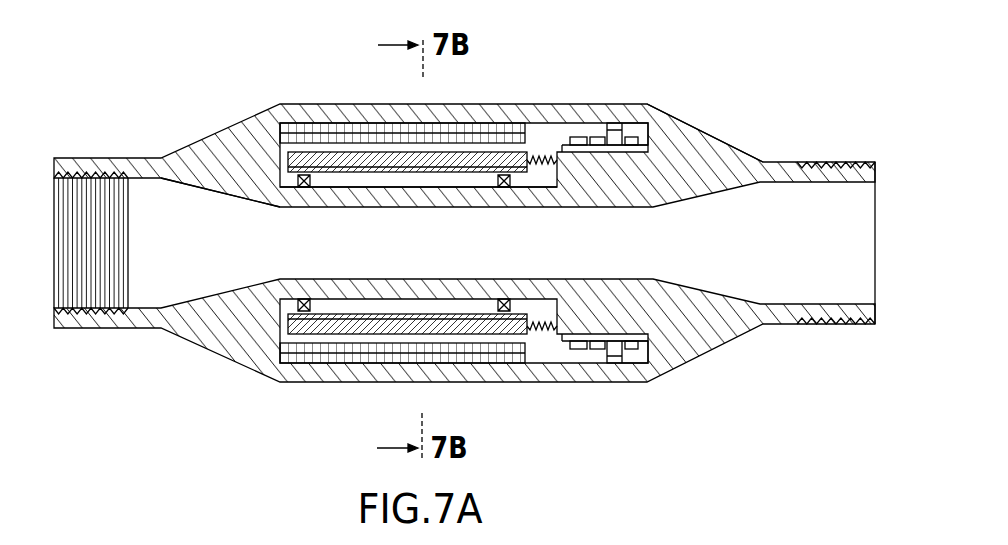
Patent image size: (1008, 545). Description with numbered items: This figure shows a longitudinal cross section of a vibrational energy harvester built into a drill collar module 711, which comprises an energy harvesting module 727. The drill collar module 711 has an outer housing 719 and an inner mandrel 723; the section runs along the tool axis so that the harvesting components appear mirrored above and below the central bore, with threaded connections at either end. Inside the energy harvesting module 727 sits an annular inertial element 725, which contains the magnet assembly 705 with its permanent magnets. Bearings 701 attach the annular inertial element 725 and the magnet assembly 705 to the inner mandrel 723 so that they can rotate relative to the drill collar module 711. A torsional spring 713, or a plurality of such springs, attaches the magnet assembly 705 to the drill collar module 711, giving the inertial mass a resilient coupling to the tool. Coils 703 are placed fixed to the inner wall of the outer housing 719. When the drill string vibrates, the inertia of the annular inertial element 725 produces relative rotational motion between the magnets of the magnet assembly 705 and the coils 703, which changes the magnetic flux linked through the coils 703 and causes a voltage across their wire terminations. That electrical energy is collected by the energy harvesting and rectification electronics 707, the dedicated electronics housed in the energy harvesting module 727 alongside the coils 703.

The bearings 701 is at (295, 330).
The coils 703 is at (286, 115).
The magnet assembly 705 is at (370, 158).
The energy harvesting and rectification electronics 707 is at (603, 128).
The drill collar module 711 is at (703, 183).
The torsional spring 713 is at (535, 322).
The outer housing 719 is at (642, 105).
The inner mandrel 723 is at (372, 332).
The annular inertial element 725 is at (278, 168).
The energy harvesting module 727 is at (536, 137).